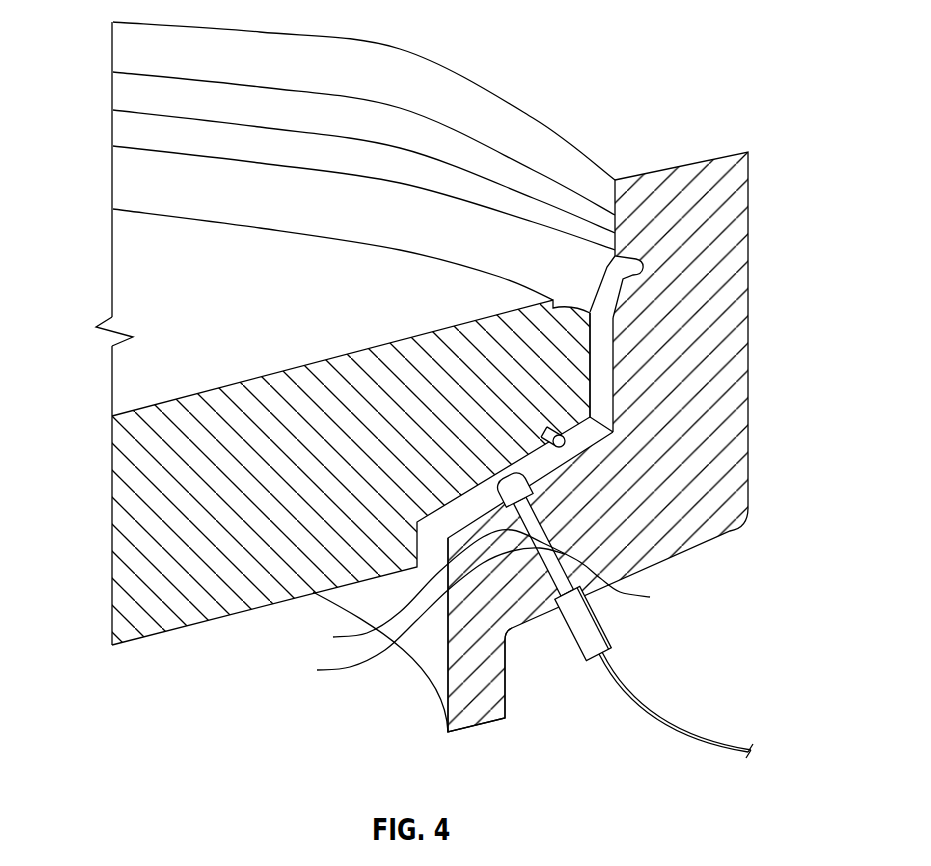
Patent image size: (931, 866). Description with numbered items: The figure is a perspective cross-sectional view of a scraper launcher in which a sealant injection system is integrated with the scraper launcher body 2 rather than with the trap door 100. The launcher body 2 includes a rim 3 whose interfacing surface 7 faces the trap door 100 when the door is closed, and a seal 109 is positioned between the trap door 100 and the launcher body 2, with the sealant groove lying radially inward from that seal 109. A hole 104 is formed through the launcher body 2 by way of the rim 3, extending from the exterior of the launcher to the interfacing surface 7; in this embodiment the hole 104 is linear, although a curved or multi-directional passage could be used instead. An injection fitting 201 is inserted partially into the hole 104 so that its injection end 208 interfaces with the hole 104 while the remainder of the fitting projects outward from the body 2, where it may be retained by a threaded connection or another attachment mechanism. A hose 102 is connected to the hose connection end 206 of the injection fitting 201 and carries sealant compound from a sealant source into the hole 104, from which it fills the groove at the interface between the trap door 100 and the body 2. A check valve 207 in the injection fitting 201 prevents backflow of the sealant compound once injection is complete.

The trap door 100 is at (127, 273).
The seal 109 is at (572, 441).
The rim 3 is at (732, 428).
The interfacing surface 7 is at (587, 442).
The injection end 208 is at (600, 547).
The hole 104 is at (469, 593).
The check valve 207 is at (416, 618).
The injection fitting 201 is at (586, 594).
The hose connection end 206 is at (575, 716).
The scraper launcher body 2 is at (483, 707).
The hose 102 is at (663, 712).